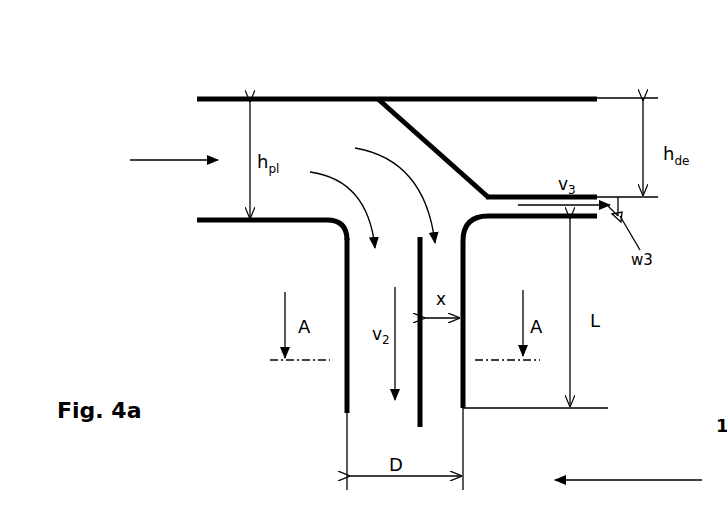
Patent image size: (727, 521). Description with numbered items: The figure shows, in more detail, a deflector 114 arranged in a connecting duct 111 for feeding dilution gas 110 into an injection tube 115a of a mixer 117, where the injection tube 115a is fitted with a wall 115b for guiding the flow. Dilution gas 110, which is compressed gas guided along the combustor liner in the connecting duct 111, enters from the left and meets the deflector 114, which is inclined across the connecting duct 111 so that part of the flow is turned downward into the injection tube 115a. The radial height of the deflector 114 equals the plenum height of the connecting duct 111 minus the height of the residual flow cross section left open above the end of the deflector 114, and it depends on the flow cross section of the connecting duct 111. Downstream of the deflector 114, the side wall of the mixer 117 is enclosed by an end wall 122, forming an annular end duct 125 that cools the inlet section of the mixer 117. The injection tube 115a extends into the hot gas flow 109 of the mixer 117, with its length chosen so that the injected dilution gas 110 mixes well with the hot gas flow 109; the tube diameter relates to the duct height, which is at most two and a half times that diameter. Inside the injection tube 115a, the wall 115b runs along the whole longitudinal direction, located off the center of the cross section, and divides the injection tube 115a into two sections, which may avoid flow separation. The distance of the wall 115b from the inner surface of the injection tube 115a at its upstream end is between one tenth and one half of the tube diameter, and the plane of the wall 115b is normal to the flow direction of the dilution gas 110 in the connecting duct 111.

The hot gas flow 109 is at (628, 466).
The dilution gas 110 is at (174, 159).
The connecting duct 111 is at (295, 140).
The deflector 114 is at (447, 153).
The injection tube 115a is at (347, 377).
The wall 115b is at (415, 403).
The mixer 117 is at (243, 325).
The end wall 122 is at (513, 195).
The annular end duct 125 is at (510, 207).